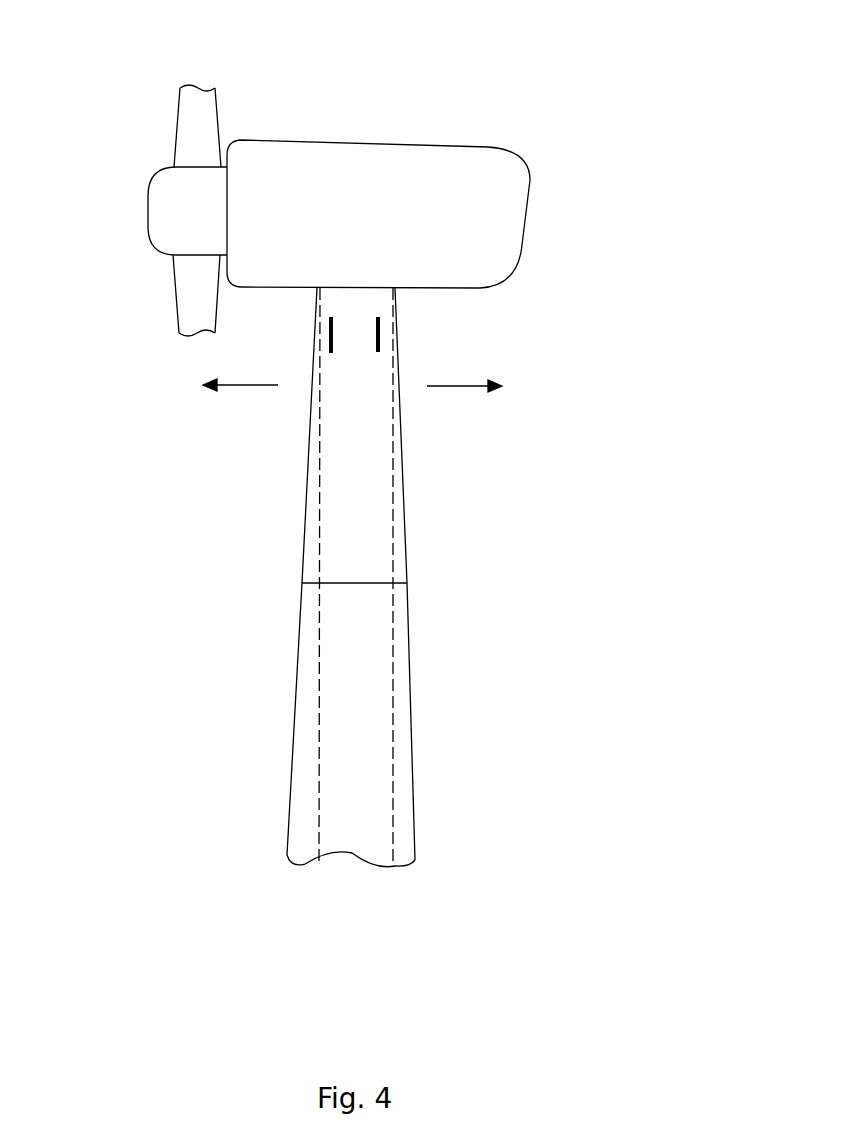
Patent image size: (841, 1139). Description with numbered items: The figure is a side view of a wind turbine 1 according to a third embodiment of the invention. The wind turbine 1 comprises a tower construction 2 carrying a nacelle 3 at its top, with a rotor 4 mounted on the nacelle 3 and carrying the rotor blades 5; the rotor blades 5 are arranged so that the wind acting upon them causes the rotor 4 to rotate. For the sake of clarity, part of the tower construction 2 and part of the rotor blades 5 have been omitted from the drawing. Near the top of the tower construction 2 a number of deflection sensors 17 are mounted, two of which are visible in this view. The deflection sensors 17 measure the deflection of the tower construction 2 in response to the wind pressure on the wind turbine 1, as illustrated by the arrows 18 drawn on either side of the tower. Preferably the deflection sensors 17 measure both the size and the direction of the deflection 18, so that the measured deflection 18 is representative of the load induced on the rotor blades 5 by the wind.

The wind turbine 1 is at (640, 321).
The tower construction 2 is at (375, 742).
The nacelle 3 is at (460, 180).
The rotor 4 is at (162, 199).
The rotor blades 5 is at (188, 120).
The deflection sensors 17 is at (331, 320).
The arrows 18 is at (238, 395).